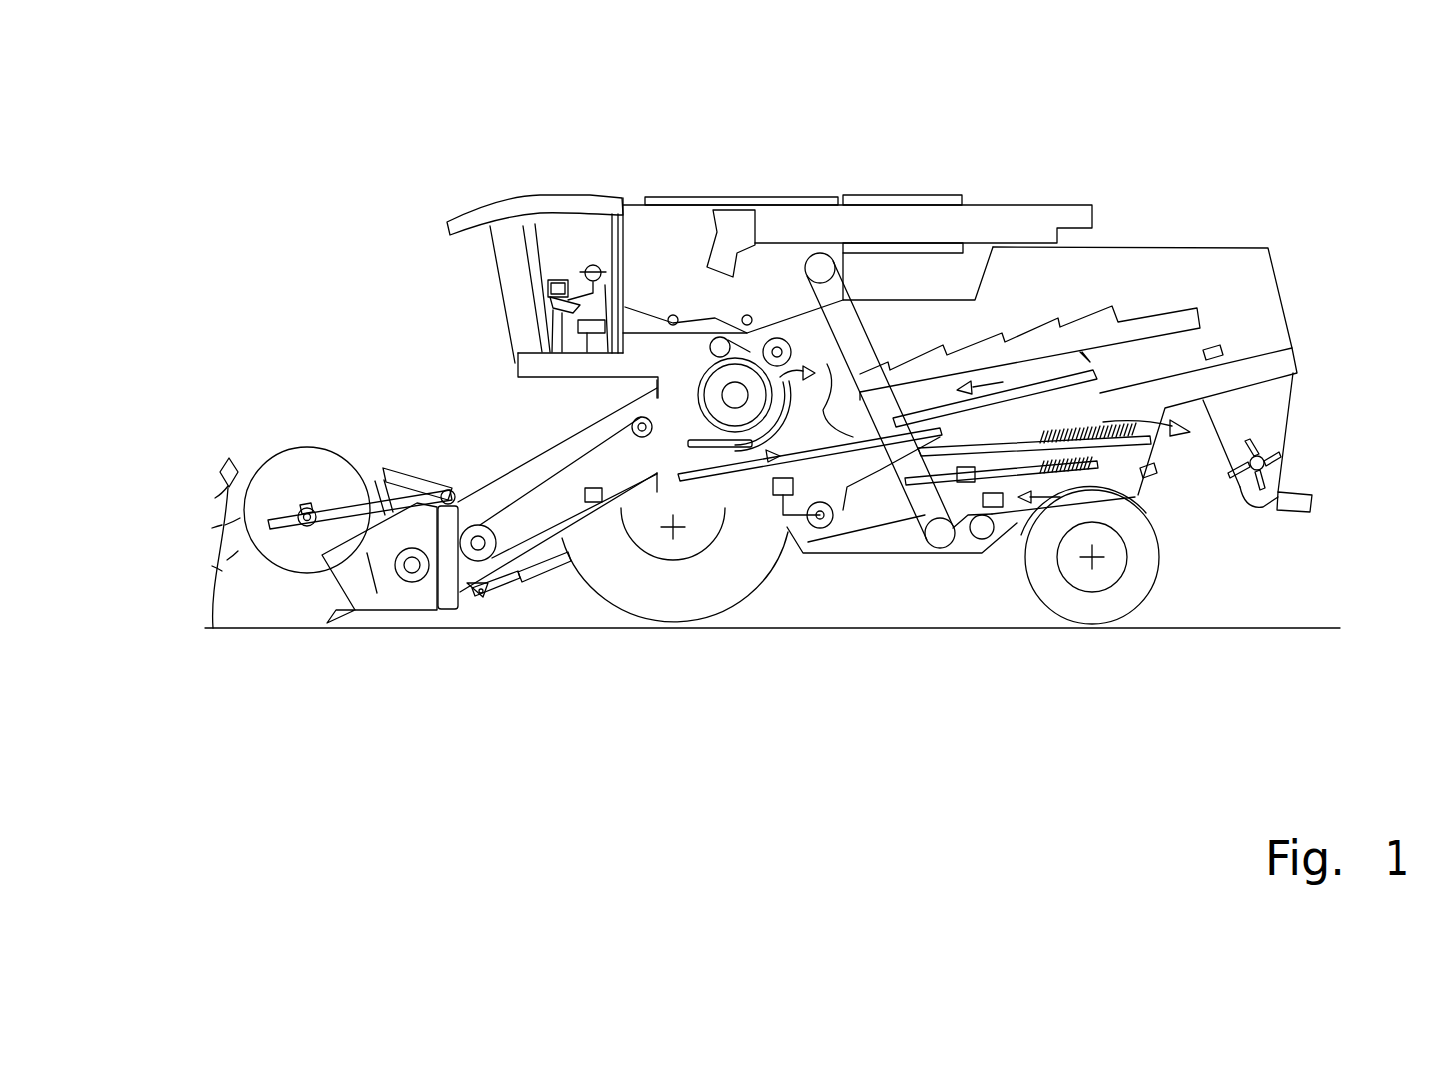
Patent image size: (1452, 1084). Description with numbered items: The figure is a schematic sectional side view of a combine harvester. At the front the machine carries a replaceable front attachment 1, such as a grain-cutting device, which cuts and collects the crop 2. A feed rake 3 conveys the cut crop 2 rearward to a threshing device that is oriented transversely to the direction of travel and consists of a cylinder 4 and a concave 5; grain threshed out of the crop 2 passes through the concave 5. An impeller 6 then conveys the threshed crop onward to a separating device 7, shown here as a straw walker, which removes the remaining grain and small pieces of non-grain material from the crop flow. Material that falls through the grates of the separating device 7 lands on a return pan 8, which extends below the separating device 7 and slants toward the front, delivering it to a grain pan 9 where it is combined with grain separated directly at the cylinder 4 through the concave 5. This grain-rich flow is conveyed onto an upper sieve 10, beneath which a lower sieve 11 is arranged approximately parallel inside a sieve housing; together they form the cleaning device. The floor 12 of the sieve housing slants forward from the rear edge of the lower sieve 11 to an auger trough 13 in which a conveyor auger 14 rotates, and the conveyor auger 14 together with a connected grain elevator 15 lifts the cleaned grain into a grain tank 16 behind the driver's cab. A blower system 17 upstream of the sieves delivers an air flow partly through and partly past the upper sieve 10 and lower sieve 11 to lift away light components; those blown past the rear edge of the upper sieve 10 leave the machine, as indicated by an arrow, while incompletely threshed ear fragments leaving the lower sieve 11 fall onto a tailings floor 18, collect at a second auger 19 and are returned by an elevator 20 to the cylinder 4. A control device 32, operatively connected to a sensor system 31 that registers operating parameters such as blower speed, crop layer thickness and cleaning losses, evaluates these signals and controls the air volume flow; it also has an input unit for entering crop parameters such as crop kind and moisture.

The front attachment 1 is at (390, 490).
The crop 2 is at (228, 520).
The feed rake 3 is at (518, 495).
The cylinder 4 is at (655, 390).
The concave 5 is at (782, 417).
The impeller 6 is at (777, 340).
The separating device 7 is at (1087, 330).
The return pan 8 is at (955, 408).
The grain pan 9 is at (757, 475).
The upper sieve 10 is at (1080, 437).
The lower sieve 11 is at (985, 533).
The floor 12 is at (1113, 500).
The auger trough 13 is at (912, 546).
The conveyor auger 14 is at (940, 535).
The grain elevator 15 is at (862, 333).
The grain tank 16 is at (667, 226).
The blower system 17 is at (813, 540).
The tailings floor 18 is at (1125, 488).
The second auger 19 is at (1007, 505).
The elevator 20 is at (816, 383).
The sensor system 31 is at (602, 493).
The control device 32 is at (547, 285).